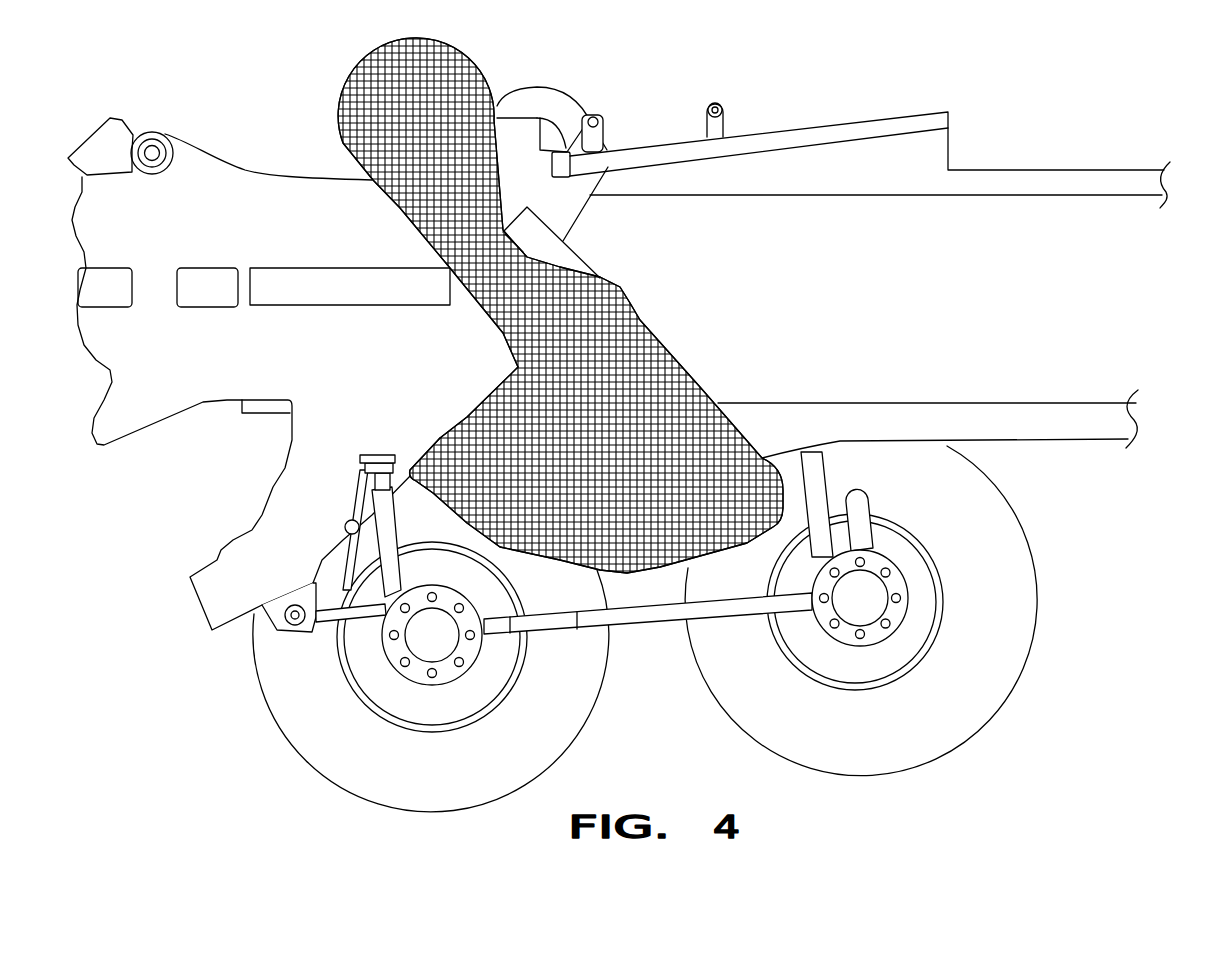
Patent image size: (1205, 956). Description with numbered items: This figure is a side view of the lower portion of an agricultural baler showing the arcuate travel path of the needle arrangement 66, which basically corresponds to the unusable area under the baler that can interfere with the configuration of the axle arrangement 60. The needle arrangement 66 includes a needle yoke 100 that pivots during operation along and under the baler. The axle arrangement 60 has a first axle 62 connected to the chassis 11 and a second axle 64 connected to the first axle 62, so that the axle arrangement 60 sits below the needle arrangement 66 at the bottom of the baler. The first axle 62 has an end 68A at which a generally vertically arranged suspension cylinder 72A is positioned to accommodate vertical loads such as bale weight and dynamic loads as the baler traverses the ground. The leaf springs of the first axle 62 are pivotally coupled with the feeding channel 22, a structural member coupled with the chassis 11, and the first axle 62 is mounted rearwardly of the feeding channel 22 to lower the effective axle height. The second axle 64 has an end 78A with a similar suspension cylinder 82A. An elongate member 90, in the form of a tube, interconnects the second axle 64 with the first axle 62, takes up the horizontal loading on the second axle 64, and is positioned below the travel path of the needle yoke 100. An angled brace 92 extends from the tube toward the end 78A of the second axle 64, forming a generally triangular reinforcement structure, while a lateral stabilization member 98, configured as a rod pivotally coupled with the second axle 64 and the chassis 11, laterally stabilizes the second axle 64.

The chassis 11 is at (150, 405).
The feeding channel 22 is at (222, 640).
The axle arrangement 60 is at (719, 735).
The first axle 62 is at (416, 691).
The second axle 64 is at (887, 656).
The needle arrangement 66 is at (696, 366).
The end of first axle 68A is at (443, 686).
The suspension cylinder 72A is at (380, 518).
The end of second axle 78A is at (858, 648).
The suspension cylinder 82A is at (812, 482).
The elongate member 90 is at (558, 632).
The angled brace 92 is at (650, 614).
The lateral stabilization member 98 is at (860, 520).
The needle yoke 100 is at (573, 253).